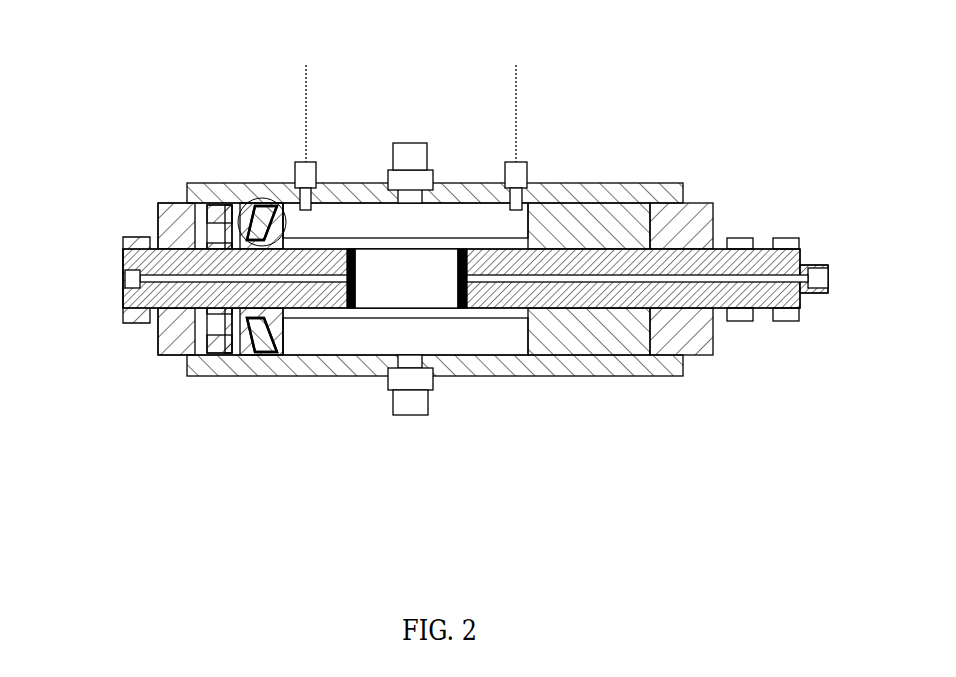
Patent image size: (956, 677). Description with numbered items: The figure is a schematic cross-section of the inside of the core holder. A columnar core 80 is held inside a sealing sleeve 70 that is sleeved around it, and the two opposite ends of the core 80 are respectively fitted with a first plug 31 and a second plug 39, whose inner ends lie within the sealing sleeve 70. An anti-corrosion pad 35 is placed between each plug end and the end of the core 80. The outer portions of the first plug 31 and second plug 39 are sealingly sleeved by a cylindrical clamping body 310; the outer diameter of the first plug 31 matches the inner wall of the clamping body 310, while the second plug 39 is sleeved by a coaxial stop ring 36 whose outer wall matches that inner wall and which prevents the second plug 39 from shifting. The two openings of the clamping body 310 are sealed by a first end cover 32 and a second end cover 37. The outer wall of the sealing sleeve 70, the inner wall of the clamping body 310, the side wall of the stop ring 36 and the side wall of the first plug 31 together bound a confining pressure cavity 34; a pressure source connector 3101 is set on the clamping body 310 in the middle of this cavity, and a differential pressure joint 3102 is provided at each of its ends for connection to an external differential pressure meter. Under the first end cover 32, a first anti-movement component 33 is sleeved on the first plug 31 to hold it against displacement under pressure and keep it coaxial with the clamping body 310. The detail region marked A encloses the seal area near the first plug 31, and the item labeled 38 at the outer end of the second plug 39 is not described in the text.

The first plug 31 is at (128, 237).
The first end cover 32 is at (178, 330).
The first anti-movement component 33 is at (225, 318).
The confining pressure cavity 34 is at (440, 343).
The anti-corrosion pad 35 is at (480, 307).
The stop ring 36 is at (583, 320).
The second end cover 37 is at (692, 338).
The lock nut 38 is at (783, 238).
The second plug 39 is at (715, 222).
The sealing sleeve 70 is at (332, 312).
The core 80 is at (393, 292).
The clamping body 310 is at (603, 183).
The pressure source connector 3101 is at (305, 163).
The differential pressure joint 3102 is at (408, 147).
The detail region A is at (250, 183).